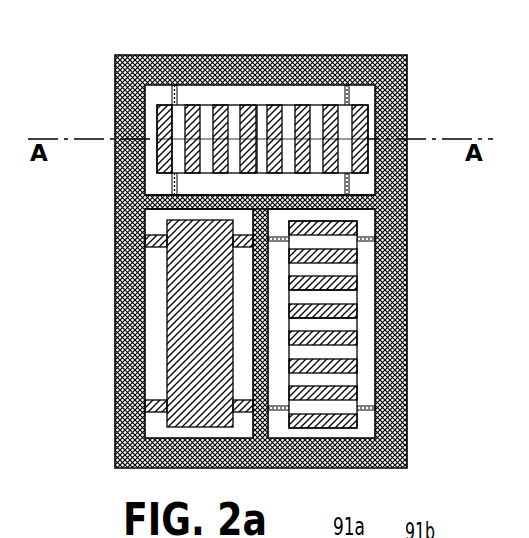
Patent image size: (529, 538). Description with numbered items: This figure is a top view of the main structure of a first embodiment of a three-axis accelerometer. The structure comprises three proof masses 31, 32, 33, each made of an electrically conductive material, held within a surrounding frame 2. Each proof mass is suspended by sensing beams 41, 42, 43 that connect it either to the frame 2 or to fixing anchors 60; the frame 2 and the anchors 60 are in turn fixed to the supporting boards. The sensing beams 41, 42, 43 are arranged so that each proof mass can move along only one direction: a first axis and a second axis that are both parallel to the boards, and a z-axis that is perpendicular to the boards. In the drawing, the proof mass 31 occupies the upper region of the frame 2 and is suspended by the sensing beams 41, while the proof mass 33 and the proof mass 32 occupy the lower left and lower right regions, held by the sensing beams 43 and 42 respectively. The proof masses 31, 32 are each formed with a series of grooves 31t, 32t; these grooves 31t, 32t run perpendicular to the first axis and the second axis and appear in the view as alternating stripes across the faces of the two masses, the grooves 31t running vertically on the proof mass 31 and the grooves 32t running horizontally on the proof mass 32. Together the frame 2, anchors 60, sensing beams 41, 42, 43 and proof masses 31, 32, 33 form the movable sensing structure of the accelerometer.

The frame 2 is at (397, 270).
The proof mass 31 is at (158, 123).
The grooves 31t is at (263, 107).
The proof mass 32 is at (347, 366).
The grooves 32t is at (345, 296).
The proof mass 33 is at (175, 312).
The sensing beam 41 is at (175, 90).
The sensing beam 42 is at (366, 238).
The sensing beam 43 is at (118, 400).
The fixing anchors 60 is at (117, 198).